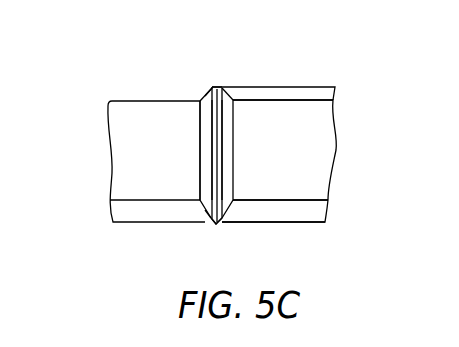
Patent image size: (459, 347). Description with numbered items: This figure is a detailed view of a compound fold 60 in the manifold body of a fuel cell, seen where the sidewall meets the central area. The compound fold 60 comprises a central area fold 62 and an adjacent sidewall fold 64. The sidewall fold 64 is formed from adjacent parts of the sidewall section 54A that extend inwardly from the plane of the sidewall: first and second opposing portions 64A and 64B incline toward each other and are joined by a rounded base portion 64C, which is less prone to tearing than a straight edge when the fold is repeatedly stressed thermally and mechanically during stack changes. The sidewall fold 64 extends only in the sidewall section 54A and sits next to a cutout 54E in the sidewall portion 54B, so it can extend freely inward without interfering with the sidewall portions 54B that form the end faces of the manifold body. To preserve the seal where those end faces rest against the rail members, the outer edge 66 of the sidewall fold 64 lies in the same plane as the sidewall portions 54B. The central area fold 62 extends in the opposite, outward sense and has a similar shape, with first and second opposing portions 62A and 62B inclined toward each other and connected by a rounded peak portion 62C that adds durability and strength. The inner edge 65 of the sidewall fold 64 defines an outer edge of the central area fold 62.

The sidewall section 54A is at (113, 128).
The sidewall portion forming end face 54B is at (300, 213).
The cutout 54E is at (228, 222).
The compound fold 60 is at (210, 91).
The central area fold 62 is at (300, 87).
The first opposing portion of central area fold 62A is at (223, 88).
The second opposing portion of central area fold 62B is at (207, 95).
The rounded peak portion 62C is at (218, 88).
The sidewall fold 64 is at (233, 172).
The first opposing portion of sidewall fold 64A is at (230, 150).
The second opposing portion of sidewall fold 64B is at (200, 124).
The rounded base portion 64C is at (217, 176).
The inner edge of sidewall fold 65 is at (212, 88).
The outer edge of sidewall fold 66 is at (210, 220).